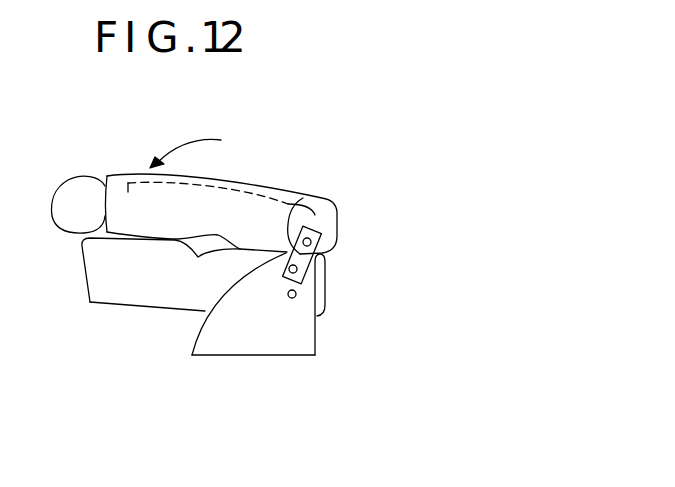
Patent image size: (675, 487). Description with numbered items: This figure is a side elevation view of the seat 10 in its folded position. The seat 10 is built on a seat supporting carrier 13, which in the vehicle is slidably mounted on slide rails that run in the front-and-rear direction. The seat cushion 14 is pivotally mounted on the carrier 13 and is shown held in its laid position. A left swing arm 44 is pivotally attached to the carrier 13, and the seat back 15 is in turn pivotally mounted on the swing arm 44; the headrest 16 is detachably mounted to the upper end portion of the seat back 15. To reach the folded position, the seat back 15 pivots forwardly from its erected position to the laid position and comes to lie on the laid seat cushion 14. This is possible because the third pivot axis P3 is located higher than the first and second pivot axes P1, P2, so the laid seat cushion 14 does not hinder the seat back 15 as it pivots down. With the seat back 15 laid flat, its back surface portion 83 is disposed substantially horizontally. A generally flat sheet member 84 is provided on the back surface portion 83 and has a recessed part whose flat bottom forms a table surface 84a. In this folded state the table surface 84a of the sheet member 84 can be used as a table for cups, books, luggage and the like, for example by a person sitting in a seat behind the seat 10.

The seat 10 is at (523, 216).
The seat supporting carrier 13 is at (297, 337).
The seat cushion 14 is at (134, 288).
The seat back 15 is at (213, 208).
The headrest 16 is at (80, 198).
The left swing arm 44 is at (307, 199).
The back surface portion 83 is at (298, 203).
The sheet member 84 is at (244, 133).
The table surface 84a is at (250, 197).
The first pivot axis P1 is at (297, 298).
The second pivot axis P2 is at (313, 271).
The third pivot axis P3 is at (313, 245).